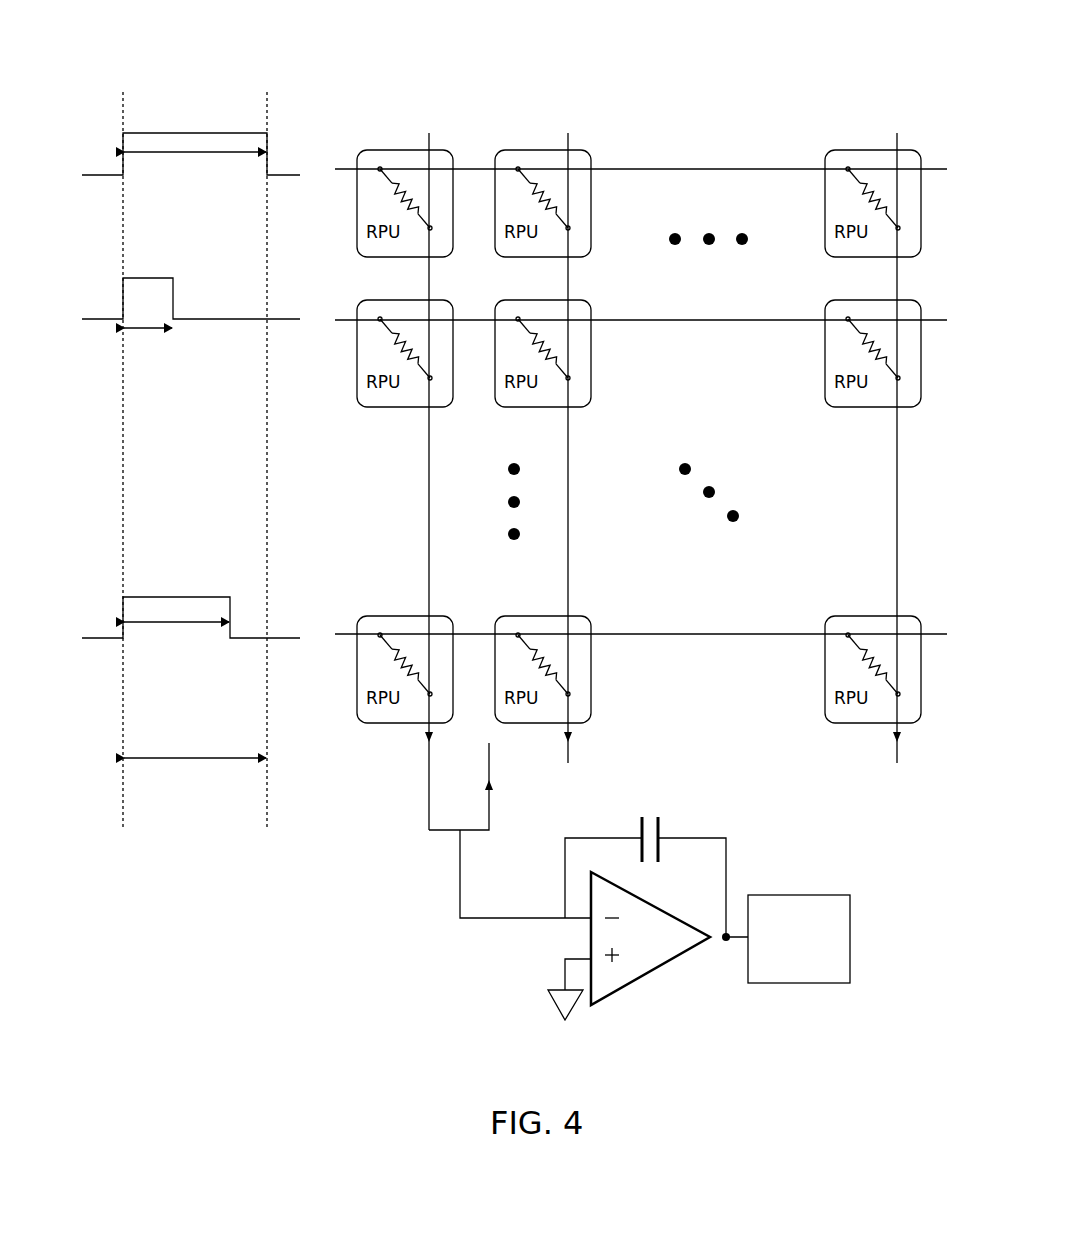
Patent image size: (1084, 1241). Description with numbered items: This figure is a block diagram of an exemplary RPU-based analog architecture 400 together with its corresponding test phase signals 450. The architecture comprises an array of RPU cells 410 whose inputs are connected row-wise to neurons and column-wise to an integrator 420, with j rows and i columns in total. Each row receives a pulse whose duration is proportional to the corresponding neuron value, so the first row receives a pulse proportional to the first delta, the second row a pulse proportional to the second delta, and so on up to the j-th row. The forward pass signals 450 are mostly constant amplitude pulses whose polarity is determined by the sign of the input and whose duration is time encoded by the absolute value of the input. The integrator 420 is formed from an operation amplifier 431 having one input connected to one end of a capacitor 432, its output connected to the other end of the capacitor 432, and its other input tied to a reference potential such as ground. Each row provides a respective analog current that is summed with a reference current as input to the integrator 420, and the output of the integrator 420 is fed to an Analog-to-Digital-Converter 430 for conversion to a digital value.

The RPU-based analog architecture 400 is at (314, 48).
The test phase signals 450 is at (176, 66).
The RPU cells 410 is at (392, 127).
The integrator 420 is at (688, 712).
The capacitor 432 is at (674, 764).
The operation amplifier 431 is at (660, 978).
The Analog-to-Digital-Converter (ADC) 430 is at (810, 880).